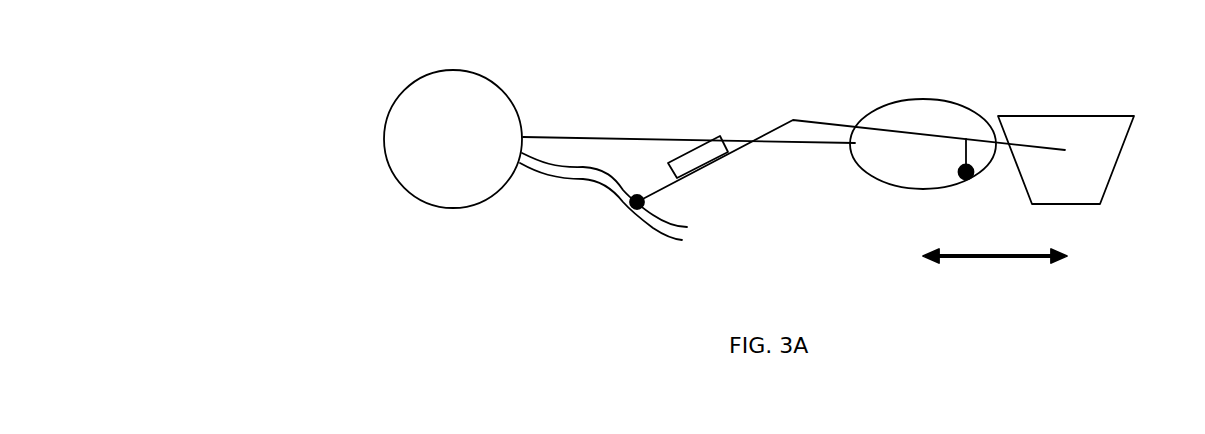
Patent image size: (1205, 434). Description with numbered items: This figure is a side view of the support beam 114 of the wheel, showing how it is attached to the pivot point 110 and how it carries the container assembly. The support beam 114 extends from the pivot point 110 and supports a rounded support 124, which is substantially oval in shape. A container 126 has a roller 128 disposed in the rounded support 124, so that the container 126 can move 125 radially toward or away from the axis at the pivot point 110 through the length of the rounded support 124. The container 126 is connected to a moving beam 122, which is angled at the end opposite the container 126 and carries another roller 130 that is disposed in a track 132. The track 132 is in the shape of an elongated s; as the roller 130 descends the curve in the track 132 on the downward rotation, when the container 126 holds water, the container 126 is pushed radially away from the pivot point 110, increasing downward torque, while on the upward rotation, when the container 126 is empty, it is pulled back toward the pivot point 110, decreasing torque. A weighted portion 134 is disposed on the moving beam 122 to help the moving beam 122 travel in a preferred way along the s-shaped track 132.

The pivot point 110 is at (452, 90).
The support beam 114 is at (608, 140).
The moving beam 122 is at (813, 120).
The rounded supports 124 is at (924, 98).
The radial movement 125 is at (1037, 252).
The container 126 is at (1082, 120).
The rollers 128 is at (966, 180).
The roller 130 is at (628, 204).
The track 132 is at (555, 180).
The weighted portion 134 is at (678, 162).